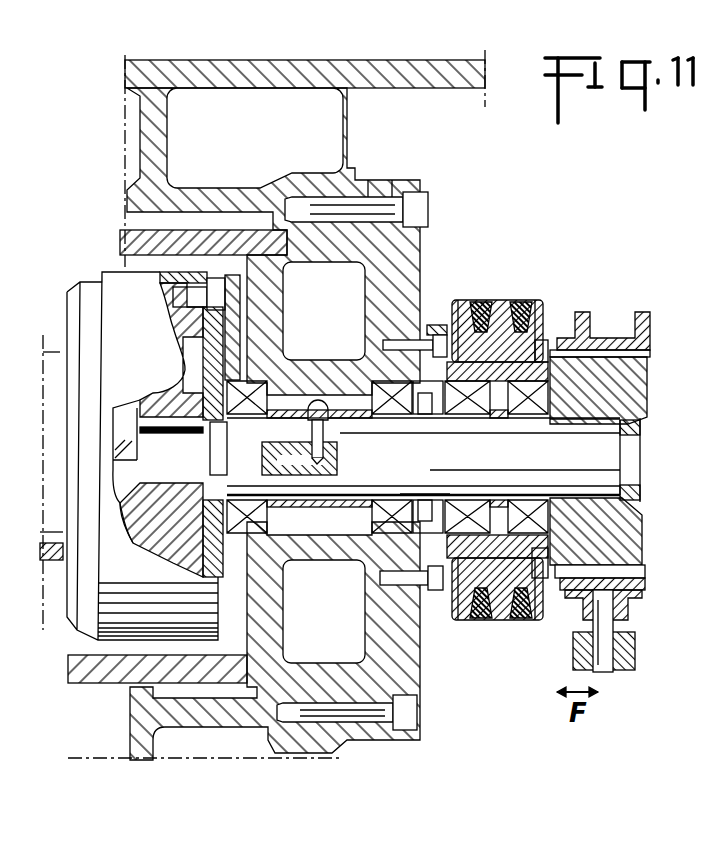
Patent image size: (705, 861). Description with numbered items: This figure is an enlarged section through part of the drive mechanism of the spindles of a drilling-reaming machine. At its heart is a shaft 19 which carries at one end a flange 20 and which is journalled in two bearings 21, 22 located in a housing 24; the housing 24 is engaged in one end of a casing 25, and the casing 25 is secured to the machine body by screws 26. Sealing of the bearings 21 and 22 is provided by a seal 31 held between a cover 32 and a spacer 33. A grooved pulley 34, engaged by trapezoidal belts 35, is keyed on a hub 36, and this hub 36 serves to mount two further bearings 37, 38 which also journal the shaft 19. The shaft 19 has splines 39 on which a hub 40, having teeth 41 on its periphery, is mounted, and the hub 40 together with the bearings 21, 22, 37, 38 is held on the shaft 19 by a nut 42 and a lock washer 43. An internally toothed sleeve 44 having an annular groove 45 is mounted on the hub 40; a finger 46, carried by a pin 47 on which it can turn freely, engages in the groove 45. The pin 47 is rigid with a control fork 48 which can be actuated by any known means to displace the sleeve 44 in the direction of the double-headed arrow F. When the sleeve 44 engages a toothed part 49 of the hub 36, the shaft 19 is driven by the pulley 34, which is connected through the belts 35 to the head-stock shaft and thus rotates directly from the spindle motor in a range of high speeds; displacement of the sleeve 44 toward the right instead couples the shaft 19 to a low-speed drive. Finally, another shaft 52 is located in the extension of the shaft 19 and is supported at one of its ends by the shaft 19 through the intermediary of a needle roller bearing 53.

The shaft 19 is at (423, 447).
The flange 20 is at (210, 350).
The bearing 21 is at (248, 414).
The bearing 22 is at (390, 412).
The housing 24 is at (370, 628).
The casing 25 is at (128, 243).
The screws 26 is at (407, 718).
The seal 31 is at (440, 402).
The cover 32 is at (423, 557).
The spacer 33 is at (425, 503).
The grooved pulley 34 is at (498, 300).
The trapezoidal belts 35 is at (520, 300).
The hub 36 is at (575, 367).
The bearing 37 is at (470, 416).
The bearing 38 is at (522, 420).
The splines 39 is at (565, 425).
The hub 40 is at (632, 372).
The teeth 41 is at (608, 572).
The nut 42 is at (640, 500).
The lock washer 43 is at (622, 492).
The internally toothed sleeve 44 is at (643, 588).
The annular groove 45 is at (607, 325).
The finger 46 is at (632, 627).
The pin 47 is at (606, 668).
The control fork 48 is at (625, 657).
The toothed part 49 is at (538, 565).
The shaft 52 is at (123, 423).
The needle roller bearing 53 is at (150, 382).